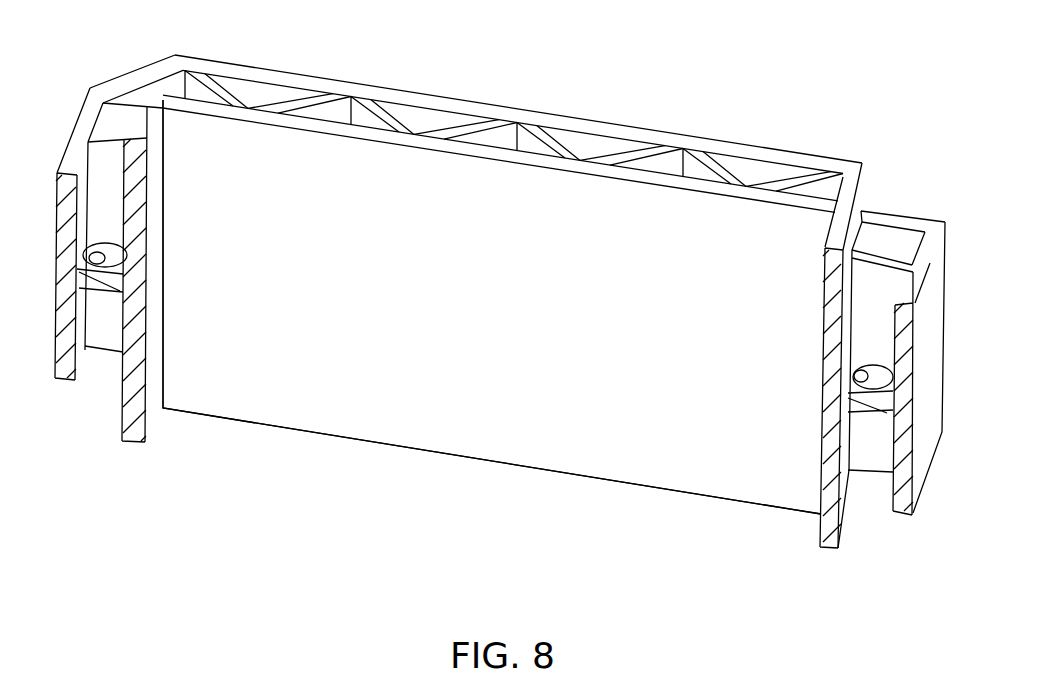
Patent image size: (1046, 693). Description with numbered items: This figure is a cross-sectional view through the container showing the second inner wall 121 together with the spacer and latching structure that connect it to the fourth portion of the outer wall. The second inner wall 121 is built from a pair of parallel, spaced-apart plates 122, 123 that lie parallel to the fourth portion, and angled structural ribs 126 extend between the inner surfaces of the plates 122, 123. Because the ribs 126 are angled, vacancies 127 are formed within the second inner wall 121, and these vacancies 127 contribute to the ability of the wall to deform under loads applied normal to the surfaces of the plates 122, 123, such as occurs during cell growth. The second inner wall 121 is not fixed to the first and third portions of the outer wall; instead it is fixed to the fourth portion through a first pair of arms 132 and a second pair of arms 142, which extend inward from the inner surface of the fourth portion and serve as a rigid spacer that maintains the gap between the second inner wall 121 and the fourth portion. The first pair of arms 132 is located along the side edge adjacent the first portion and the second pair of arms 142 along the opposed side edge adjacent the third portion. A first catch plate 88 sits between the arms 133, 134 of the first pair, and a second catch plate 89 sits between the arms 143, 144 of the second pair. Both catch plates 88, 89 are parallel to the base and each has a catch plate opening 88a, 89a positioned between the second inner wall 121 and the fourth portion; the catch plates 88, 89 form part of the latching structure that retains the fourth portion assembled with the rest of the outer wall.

The plate 122 is at (473, 102).
The vacancies 127 is at (593, 140).
The angled structural ribs 126 is at (712, 154).
The second inner wall 121 is at (506, 320).
The plate 123 is at (506, 320).
The second pair of arms 142 is at (146, 294).
The arm 143 is at (73, 383).
The arm 144 is at (140, 433).
The second catch plate 89 is at (122, 273).
The catch plate opening 89a is at (120, 252).
The first pair of arms 132 is at (843, 428).
The arm 133 is at (893, 507).
The arm 134 is at (820, 535).
The first catch plate 88 is at (855, 372).
The catch plate opening 88a is at (860, 372).